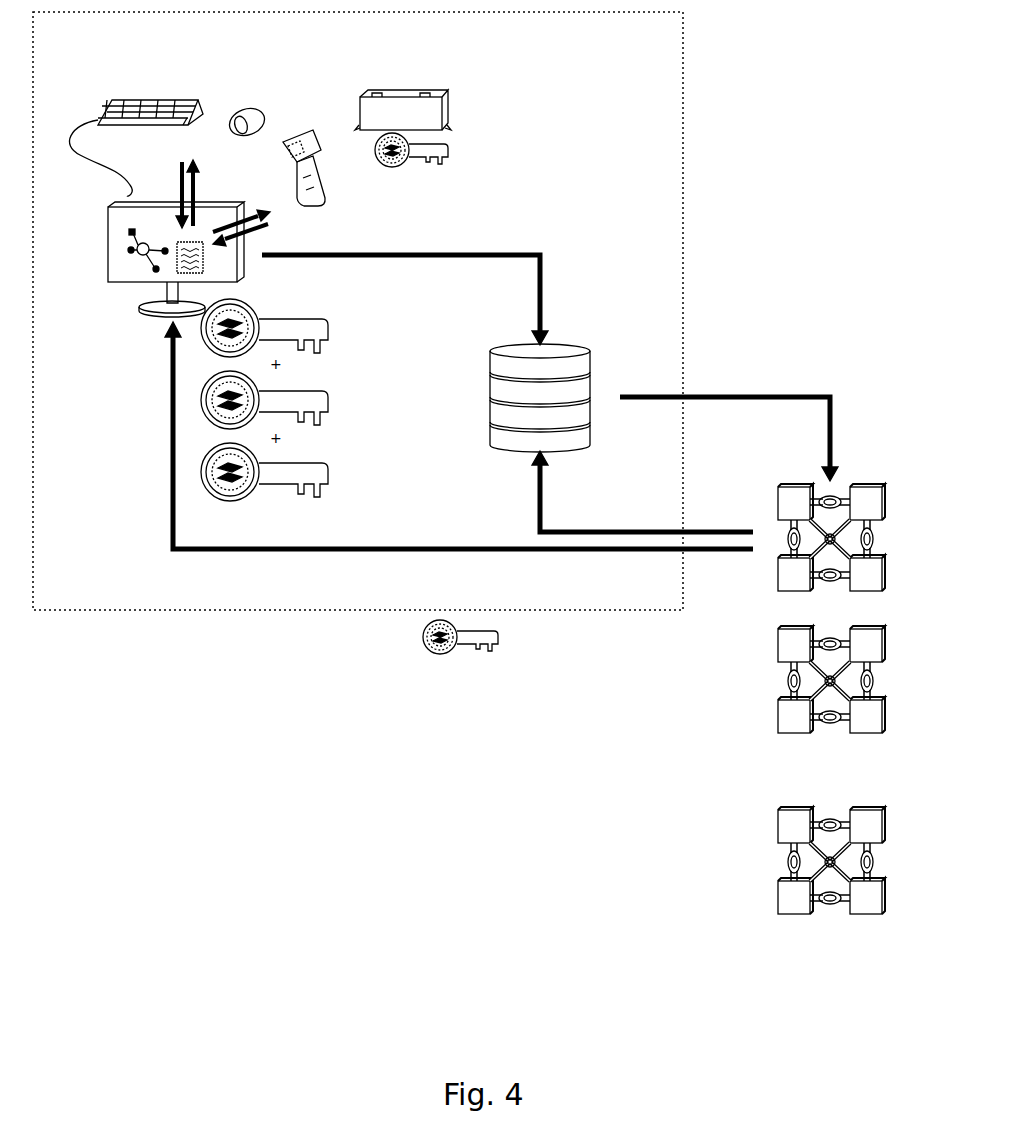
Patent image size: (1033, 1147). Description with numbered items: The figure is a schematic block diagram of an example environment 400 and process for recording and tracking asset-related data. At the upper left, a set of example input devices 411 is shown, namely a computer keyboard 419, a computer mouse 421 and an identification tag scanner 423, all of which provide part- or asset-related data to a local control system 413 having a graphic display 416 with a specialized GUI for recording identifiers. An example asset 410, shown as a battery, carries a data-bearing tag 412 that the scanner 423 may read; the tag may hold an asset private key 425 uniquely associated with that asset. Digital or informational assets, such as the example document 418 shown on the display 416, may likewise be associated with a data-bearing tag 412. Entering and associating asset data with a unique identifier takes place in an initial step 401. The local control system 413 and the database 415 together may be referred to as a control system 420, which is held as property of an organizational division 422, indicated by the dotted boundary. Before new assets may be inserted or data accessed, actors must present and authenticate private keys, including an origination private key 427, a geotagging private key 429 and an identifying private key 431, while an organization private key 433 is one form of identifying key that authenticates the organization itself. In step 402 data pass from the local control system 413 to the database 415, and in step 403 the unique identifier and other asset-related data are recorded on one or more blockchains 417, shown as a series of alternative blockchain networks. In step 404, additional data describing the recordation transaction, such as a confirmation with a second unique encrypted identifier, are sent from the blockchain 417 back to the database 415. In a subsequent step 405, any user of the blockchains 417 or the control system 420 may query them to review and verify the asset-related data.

The environment 400 is at (190, 961).
The step 401 is at (191, 52).
The step 402 is at (362, 252).
The step 403 is at (729, 419).
The step 404 is at (642, 491).
The step 405 is at (459, 452).
The asset 410 is at (445, 107).
The input devices 411 is at (303, 138).
The data-bearing tag 412 is at (365, 122).
The local control system 413 is at (243, 275).
The database 415 is at (508, 448).
The graphic display 416 is at (148, 269).
The blockchain 417 is at (780, 833).
The document 418 is at (177, 240).
The computer keyboard 419 is at (105, 108).
The control system 420 is at (130, 511).
The computer mouse 421 is at (242, 114).
The organizational division 422 is at (214, 611).
The identification tag scanner 423 is at (324, 203).
The asset private key 425 is at (449, 152).
The origination private key 427 is at (330, 330).
The geotagging private key 429 is at (330, 402).
The identifying private key 431 is at (330, 474).
The organization private key 433 is at (499, 640).